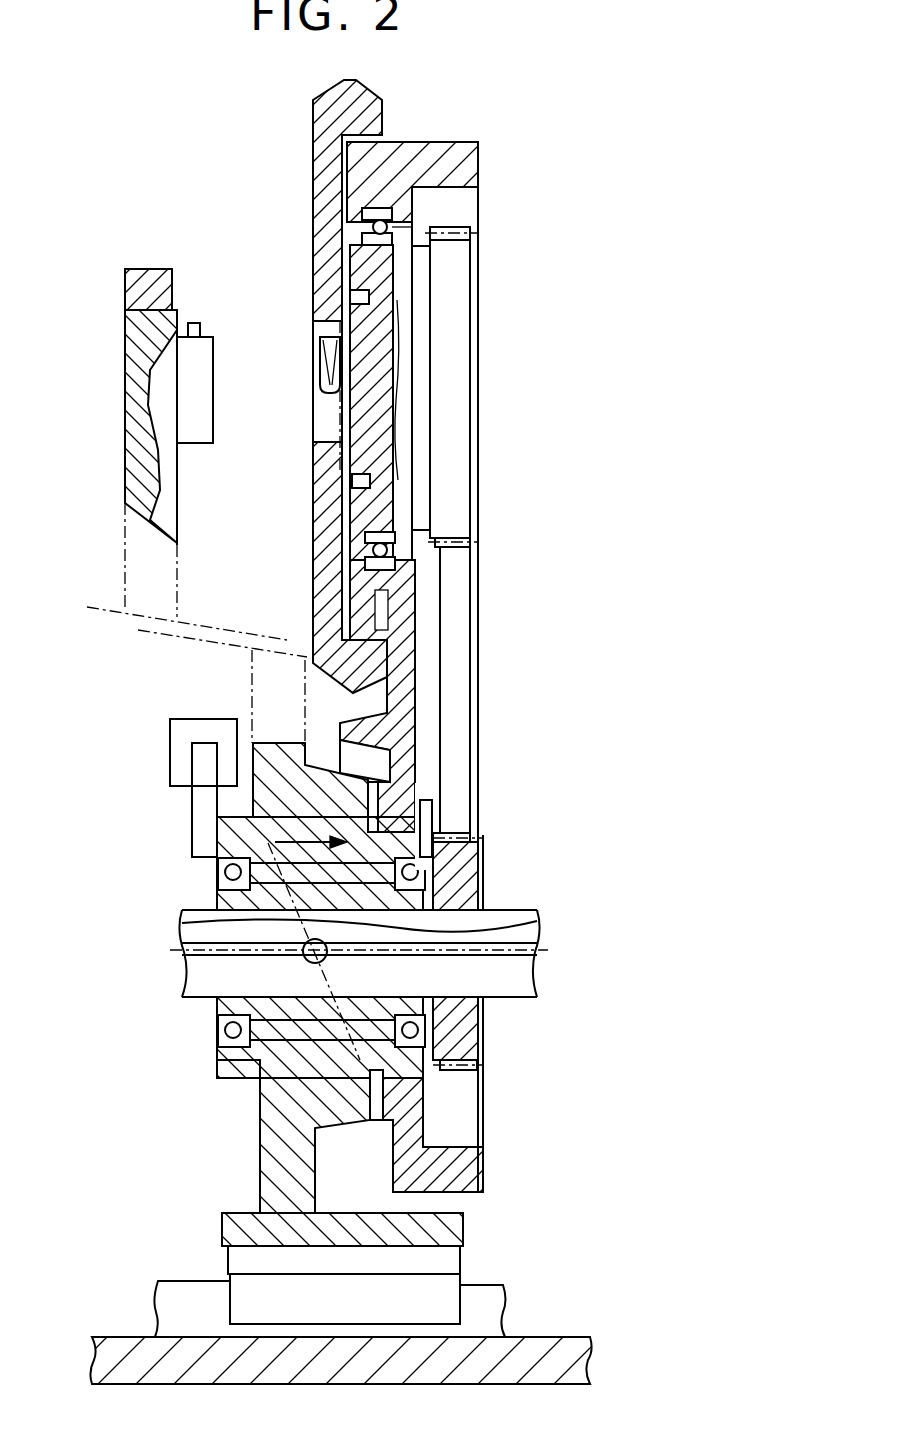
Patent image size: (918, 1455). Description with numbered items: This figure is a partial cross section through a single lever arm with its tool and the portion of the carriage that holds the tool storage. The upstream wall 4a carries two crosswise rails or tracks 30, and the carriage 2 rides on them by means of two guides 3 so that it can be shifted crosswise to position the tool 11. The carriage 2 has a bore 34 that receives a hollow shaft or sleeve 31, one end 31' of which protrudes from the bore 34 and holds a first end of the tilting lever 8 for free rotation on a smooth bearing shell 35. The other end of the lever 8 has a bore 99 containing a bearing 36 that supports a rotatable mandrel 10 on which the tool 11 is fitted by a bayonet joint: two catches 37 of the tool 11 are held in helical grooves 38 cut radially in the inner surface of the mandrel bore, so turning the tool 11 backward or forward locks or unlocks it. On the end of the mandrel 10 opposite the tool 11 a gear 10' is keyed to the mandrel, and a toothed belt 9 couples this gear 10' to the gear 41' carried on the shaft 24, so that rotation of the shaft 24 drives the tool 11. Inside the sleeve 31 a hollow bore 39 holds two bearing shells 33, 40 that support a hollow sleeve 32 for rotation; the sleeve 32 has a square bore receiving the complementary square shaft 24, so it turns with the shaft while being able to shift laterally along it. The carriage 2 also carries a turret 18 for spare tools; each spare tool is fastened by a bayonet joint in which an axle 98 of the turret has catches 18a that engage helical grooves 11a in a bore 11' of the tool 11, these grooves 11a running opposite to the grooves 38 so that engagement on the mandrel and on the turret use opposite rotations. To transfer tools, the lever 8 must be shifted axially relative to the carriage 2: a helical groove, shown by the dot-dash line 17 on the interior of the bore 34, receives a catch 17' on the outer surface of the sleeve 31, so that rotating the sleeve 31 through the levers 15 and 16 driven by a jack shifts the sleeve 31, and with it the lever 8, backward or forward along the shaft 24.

The carriage 2 is at (137, 272).
The guides 3 is at (240, 1262).
The upstream wall 4a is at (142, 1352).
The tilting lever 8 is at (480, 170).
The toothed belt 9 is at (460, 612).
The mandrel 10 is at (487, 373).
The gear 10' is at (498, 387).
The tool 11 is at (321, 371).
The bore 11' is at (294, 395).
The helical grooves 11a is at (326, 375).
The lever 15 is at (181, 727).
The lever 16 is at (205, 832).
The helical groove 17 is at (323, 947).
The catch 17' is at (537, 914).
The turret 18 is at (137, 350).
The catches 18a is at (196, 323).
The shaft 24 is at (200, 940).
The rails or tracks 30 is at (490, 1308).
The hollow shaft or sleeve 31 is at (254, 1052).
The end of sleeve 31' is at (474, 1127).
The hollow sleeve 32 is at (225, 1025).
The bearing shell 33 is at (237, 1042).
The bore 34 is at (245, 1085).
The smooth bearing shell 35 is at (425, 1100).
The bearing 36 is at (372, 551).
The catches 37 is at (352, 486).
The helical grooves 38 is at (352, 294).
The hollow bore 39 is at (400, 855).
The bearing shell 40 is at (462, 870).
The gear 41' is at (499, 1033).
The axle 98 is at (190, 390).
The bore 99 is at (415, 230).